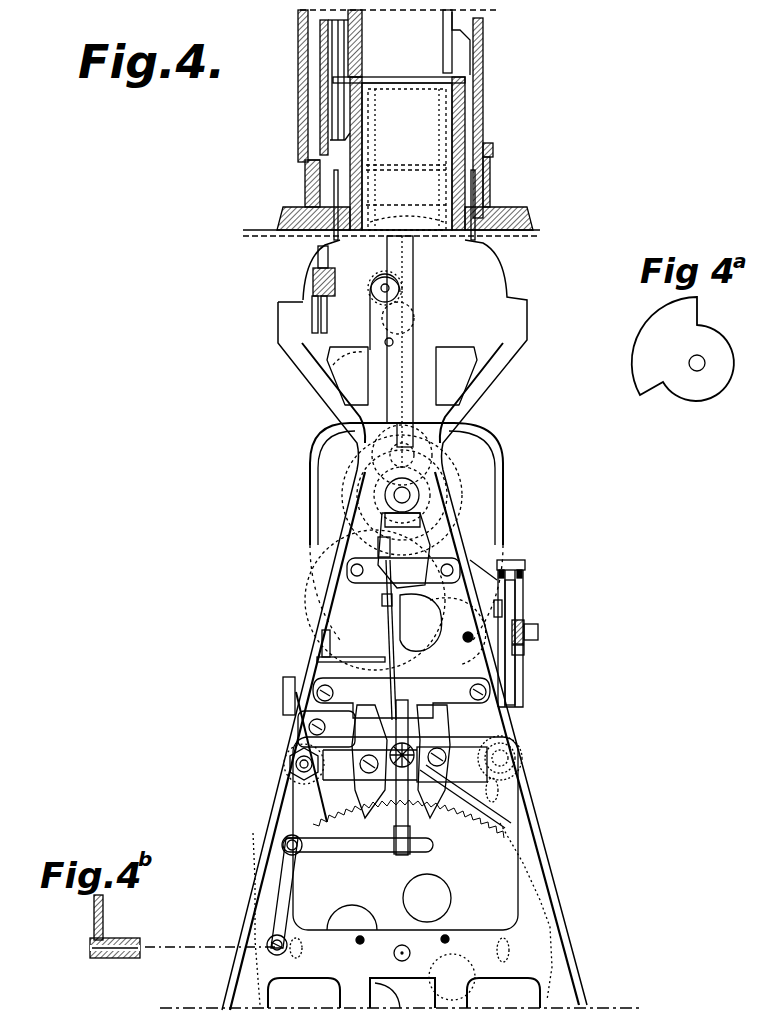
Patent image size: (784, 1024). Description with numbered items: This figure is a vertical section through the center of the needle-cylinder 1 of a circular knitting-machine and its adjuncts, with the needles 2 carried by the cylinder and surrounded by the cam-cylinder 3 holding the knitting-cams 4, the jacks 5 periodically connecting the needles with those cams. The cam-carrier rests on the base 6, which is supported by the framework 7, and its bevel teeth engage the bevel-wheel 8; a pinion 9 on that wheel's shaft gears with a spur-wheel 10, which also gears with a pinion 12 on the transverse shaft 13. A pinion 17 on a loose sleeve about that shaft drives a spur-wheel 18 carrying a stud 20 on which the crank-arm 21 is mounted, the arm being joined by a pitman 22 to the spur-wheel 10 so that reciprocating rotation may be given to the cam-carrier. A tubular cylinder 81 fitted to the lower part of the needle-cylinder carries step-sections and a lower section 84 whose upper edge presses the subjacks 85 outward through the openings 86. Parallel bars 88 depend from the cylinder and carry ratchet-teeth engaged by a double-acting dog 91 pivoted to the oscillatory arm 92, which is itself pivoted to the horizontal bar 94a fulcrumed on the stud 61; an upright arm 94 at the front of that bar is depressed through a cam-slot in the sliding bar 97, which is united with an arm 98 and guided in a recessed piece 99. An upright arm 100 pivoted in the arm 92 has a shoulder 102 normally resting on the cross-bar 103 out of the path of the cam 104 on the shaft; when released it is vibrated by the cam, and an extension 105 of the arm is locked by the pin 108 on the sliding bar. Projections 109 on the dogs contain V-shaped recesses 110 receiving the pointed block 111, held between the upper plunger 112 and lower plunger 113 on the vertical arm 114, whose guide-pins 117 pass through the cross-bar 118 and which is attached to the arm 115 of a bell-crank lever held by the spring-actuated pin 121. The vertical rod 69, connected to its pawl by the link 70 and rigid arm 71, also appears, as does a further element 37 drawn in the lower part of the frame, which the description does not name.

In FIG. 4, the needle-cylinder 1 is at (455, 57).
In FIG. 4, the needles 2 is at (450, 24).
In FIG. 4, the cam-cylinder 3 is at (493, 184).
In FIG. 4, the knitting-cams 4 is at (298, 170).
In FIG. 4, the jacks 5 is at (320, 102).
In FIG. 4, the base 6 is at (535, 222).
In FIG. 4, the framework 7 is at (530, 314).
In FIG. 4, the bevel-wheel 8 is at (312, 253).
In FIG. 4, the pinion 9 is at (385, 326).
In FIG. 4, the spur-wheel 10 is at (463, 373).
In FIG. 4, the pinion 12 is at (420, 496).
In FIG. 4, the transverse shaft 13 is at (393, 496).
In FIG. 4, the pinion 17 is at (445, 522).
In FIG. 4, the spur-wheel 18 is at (306, 592).
In FIG. 4, the stud 20 is at (503, 600).
In FIG. 4, the crank-arm 21 is at (483, 572).
In FIG. 4, the pitman 22 is at (492, 487).
In FIG. 4, the gear 37 is at (497, 873).
In FIG. 4, the stud 61 is at (296, 765).
In FIG. 4, the vertical rod 69 is at (322, 640).
In FIG. 4, the link 70 is at (293, 672).
In FIG. 4, the rigid arm 71 is at (320, 660).
In FIG. 4, the tubular cylinder 81 is at (407, 156).
In FIG. 4, the section 84 is at (472, 200).
In FIG. 4, the subjacks 85 is at (343, 202).
In FIG. 4, the openings 86 is at (384, 160).
In FIG. 4, the parallel bars 88 is at (403, 288).
In FIG. 4, the double-acting dog 91 is at (383, 795).
In FIG. 4, the oscillatory arm 92 is at (348, 745).
In FIG. 4, the upright arm 94 is at (525, 607).
In FIG. 4, the horizontal bar 94a is at (480, 787).
In FIG. 4, the sliding bar 97 is at (527, 655).
In FIG. 4, the arm 98 is at (515, 565).
In FIG. 4, the recessed piece 99 is at (515, 650).
In FIG. 4, the upright arm 100 is at (382, 606).
In FIG. 4, the shoulder 102 is at (378, 548).
In FIG. 4, the cross-bar 103 is at (347, 568).
In FIG. 4, the cam 104 is at (417, 550).
In FIG. 4A, the cam 104 is at (683, 361).
In FIG. 4, the extension 105 is at (490, 690).
In FIG. 4, the pin 108 is at (470, 637).
In FIG. 4, the projections 109 is at (487, 748).
In FIG. 4, the V-shaped recesses 110 is at (483, 767).
In FIG. 4, the block 111 is at (465, 807).
In FIG. 4, the upper plunger 112 is at (438, 777).
In FIG. 4, the lower plunger 113 is at (436, 770).
In FIG. 4, the vertical arm 114 is at (395, 820).
In FIG. 4, the arm of bell-crank lever 115 is at (378, 822).
In FIG. 4, the guide-pins 117 is at (443, 629).
In FIG. 4, the cross-bar 118 is at (317, 694).
In FIG. 4B, the spring-actuated pin 121 is at (90, 949).